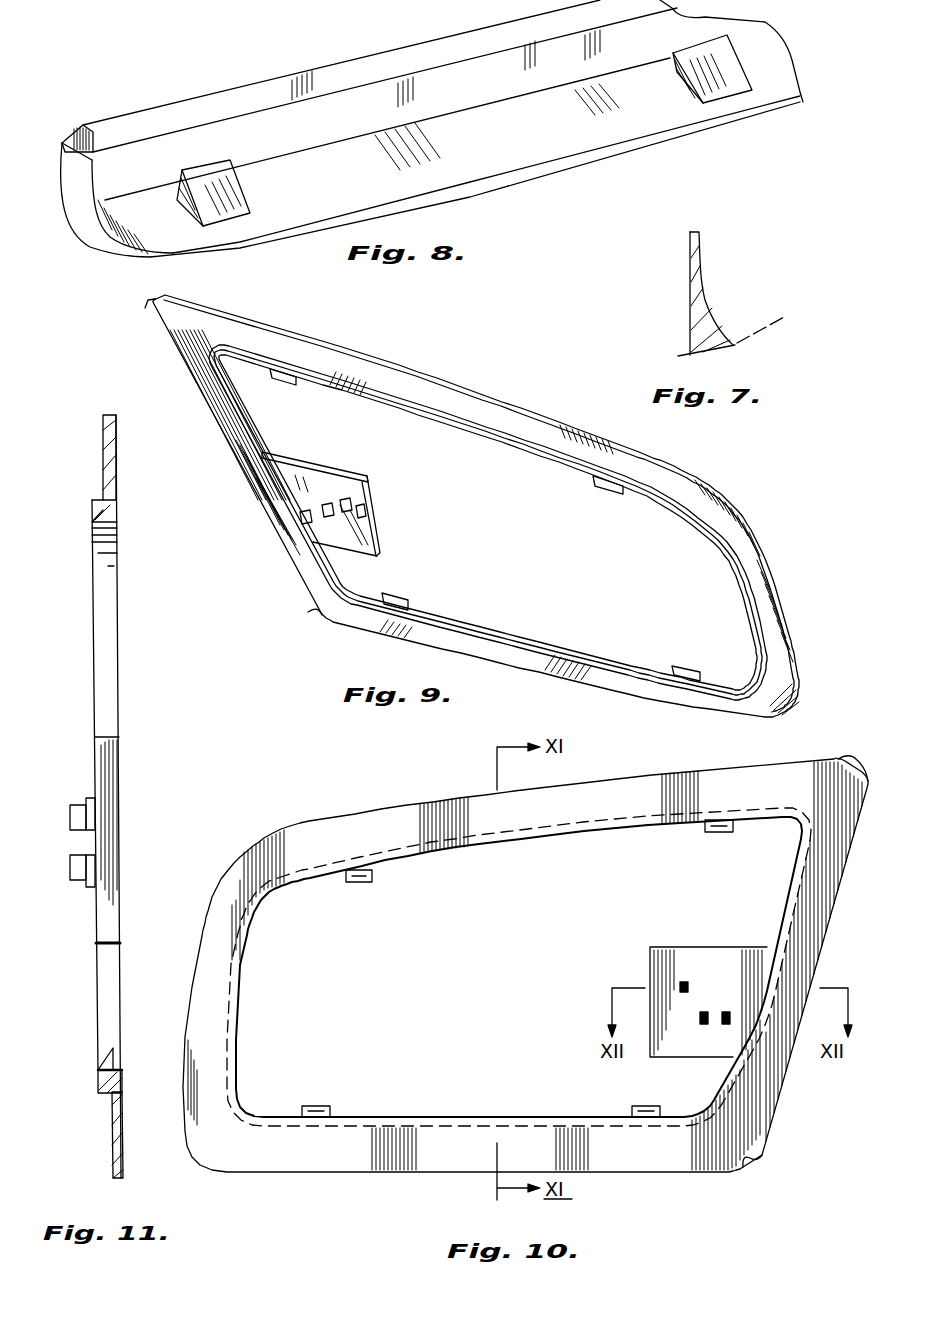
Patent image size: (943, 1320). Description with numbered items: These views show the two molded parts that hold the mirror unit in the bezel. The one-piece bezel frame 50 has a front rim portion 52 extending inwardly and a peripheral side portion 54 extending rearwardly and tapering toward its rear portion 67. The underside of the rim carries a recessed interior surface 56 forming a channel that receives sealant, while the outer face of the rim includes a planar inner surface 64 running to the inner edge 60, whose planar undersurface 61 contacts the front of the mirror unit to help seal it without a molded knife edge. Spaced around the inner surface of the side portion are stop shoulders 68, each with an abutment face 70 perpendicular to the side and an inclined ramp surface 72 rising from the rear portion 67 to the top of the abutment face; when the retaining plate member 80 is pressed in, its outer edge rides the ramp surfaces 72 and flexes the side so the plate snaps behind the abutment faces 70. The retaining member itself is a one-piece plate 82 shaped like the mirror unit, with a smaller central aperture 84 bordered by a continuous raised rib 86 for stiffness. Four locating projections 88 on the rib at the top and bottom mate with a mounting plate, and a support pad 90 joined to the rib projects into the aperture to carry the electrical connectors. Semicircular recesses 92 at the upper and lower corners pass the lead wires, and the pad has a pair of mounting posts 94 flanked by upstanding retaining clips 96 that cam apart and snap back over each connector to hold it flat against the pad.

In FIG. 8, the bezel frame 50 is at (399, 47).
In FIG. 8, the front rim portion 52 is at (70, 135).
In FIG. 7, the front rim portion 52 is at (690, 338).
In FIG. 8, the peripheral side portion 54 is at (80, 198).
In FIG. 8, the recessed interior surface 56 is at (160, 122).
In FIG. 7, the recessed interior surface 56 is at (700, 290).
In FIG. 8, the inner edge 60 is at (280, 78).
In FIG. 7, the inner edge 60 is at (690, 233).
In FIG. 7, the planar undersurface 61 is at (700, 232).
In FIG. 7, the inner surface 64 is at (690, 286).
In FIG. 8, the rear portion 67 is at (490, 155).
In FIG. 8, the stop shoulders 68 is at (256, 212).
In FIG. 8, the abutment face 70 is at (185, 185).
In FIG. 8, the ramp surface 72 is at (236, 190).
In FIG. 9, the retaining plate member 80 is at (370, 354).
In FIG. 11, the retaining plate member 80 is at (133, 686).
In FIG. 10, the retaining plate member 80 is at (392, 800).
In FIG. 9, the plate 82 is at (600, 452).
In FIG. 11, the plate 82 is at (104, 452).
In FIG. 10, the plate 82 is at (592, 795).
In FIG. 9, the central aperture 84 is at (705, 560).
In FIG. 11, the central aperture 84 is at (100, 533).
In FIG. 9, the raised rib 86 is at (480, 438).
In FIG. 11, the raised rib 86 is at (100, 513).
In FIG. 9, the locating projections 88 is at (284, 382).
In FIG. 11, the locating projections 88 is at (100, 1058).
In FIG. 10, the locating projections 88 is at (360, 882).
In FIG. 9, the support pad 90 is at (370, 536).
In FIG. 11, the support pad 90 is at (106, 762).
In FIG. 10, the support pad 90 is at (715, 958).
In FIG. 9, the semicircular recesses 92 is at (150, 308).
In FIG. 10, the semicircular recesses 92 is at (865, 770).
In FIG. 9, the mounting posts 94 is at (328, 525).
In FIG. 11, the mounting posts 94 is at (78, 808).
In FIG. 9, the retaining clips 96 is at (307, 508).
In FIG. 11, the retaining clips 96 is at (90, 800).